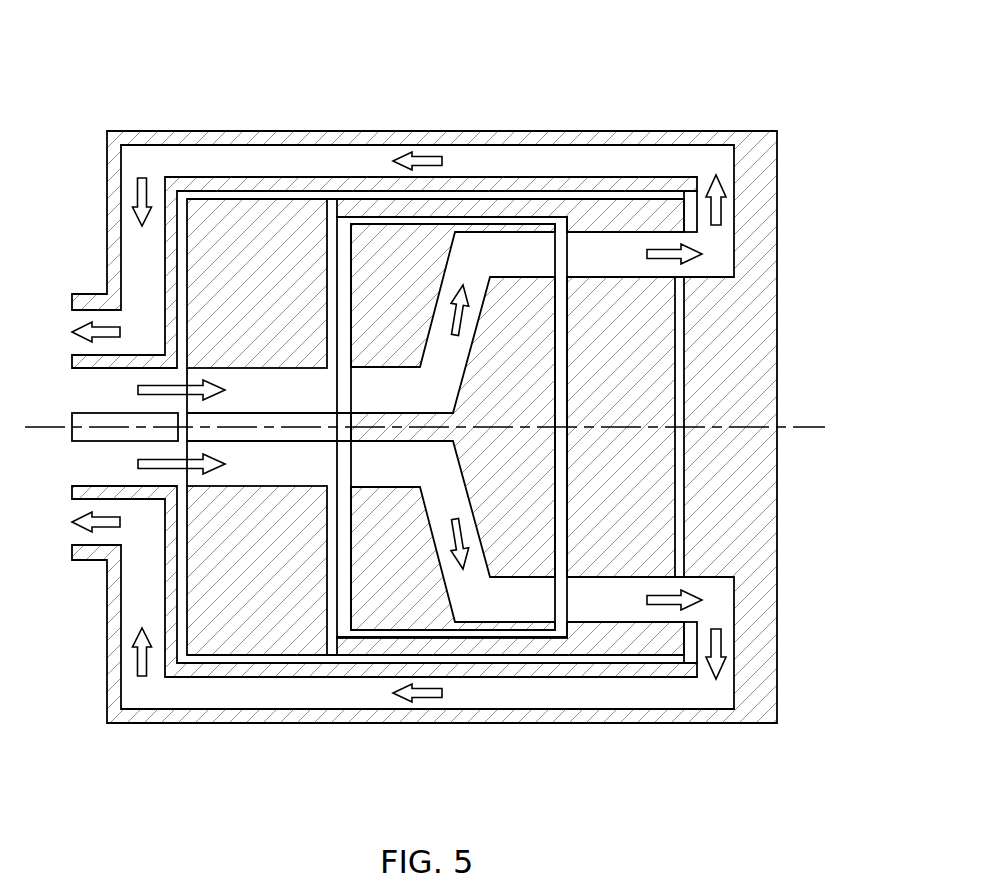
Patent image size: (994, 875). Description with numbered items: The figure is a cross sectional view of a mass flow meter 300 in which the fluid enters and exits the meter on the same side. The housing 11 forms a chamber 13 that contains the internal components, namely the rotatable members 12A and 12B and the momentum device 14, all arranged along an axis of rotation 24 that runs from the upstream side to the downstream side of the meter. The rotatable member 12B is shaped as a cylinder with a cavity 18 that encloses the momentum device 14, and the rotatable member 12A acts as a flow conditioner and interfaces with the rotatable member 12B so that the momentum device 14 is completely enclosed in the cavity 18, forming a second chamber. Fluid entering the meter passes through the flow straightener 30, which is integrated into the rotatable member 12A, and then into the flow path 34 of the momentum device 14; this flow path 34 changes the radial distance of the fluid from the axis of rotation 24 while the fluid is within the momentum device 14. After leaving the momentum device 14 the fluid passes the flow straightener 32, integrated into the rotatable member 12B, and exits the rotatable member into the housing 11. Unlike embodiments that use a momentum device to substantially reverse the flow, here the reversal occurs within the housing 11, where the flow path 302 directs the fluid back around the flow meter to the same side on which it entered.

The mass flow meter 300 is at (702, 82).
The housing 11 is at (147, 136).
The chamber 13 is at (237, 199).
The cavity 18 is at (344, 222).
The flow path 34 is at (512, 257).
The flow path 302 is at (583, 163).
The flow straightener 32 is at (617, 253).
The flow straightener 30 is at (240, 383).
The axis of rotation 24 is at (805, 430).
The rotatable member 12A is at (230, 640).
The momentum device 14 is at (390, 620).
The rotatable member 12B is at (617, 637).